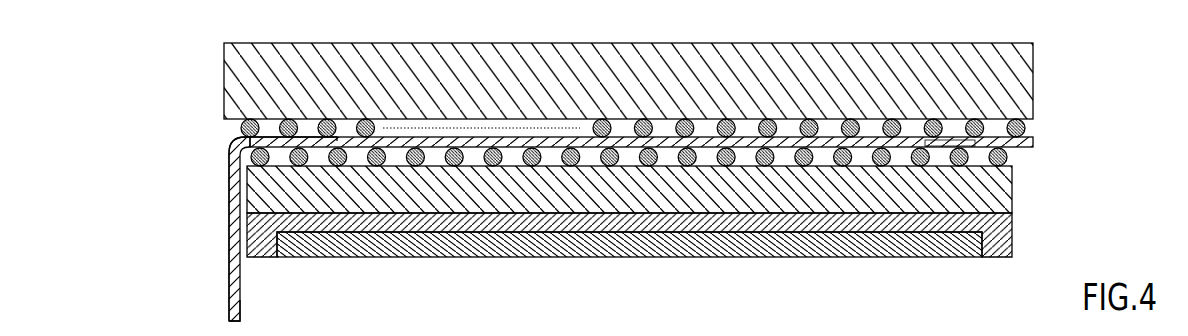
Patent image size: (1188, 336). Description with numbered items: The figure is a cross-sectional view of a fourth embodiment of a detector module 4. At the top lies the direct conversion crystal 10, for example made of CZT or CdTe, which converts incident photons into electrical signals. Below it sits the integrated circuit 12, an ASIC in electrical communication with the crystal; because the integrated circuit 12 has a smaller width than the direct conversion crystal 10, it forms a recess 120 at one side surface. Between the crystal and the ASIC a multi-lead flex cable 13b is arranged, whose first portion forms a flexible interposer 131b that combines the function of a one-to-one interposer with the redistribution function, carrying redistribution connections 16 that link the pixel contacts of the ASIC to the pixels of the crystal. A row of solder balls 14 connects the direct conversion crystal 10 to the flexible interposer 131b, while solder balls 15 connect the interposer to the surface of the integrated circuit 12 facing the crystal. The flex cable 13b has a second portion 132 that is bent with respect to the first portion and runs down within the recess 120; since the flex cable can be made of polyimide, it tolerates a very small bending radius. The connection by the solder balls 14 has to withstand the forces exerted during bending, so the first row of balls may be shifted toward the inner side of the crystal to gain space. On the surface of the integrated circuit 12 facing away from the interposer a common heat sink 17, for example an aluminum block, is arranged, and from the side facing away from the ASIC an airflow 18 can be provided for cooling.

The detector module 4 is at (223, 42).
The direct conversion crystal 10 is at (1034, 72).
The integrated circuit 12 is at (1013, 190).
The flex cable 13b is at (227, 237).
The solder balls 14 is at (1034, 127).
The solder balls 15 is at (1008, 157).
The redistribution connections 16 is at (947, 143).
The heat sink 17 is at (1013, 233).
The airflow 18 is at (361, 252).
The recess 120 is at (250, 305).
The flexible interposer 131b is at (478, 140).
The second portion 132 is at (228, 266).